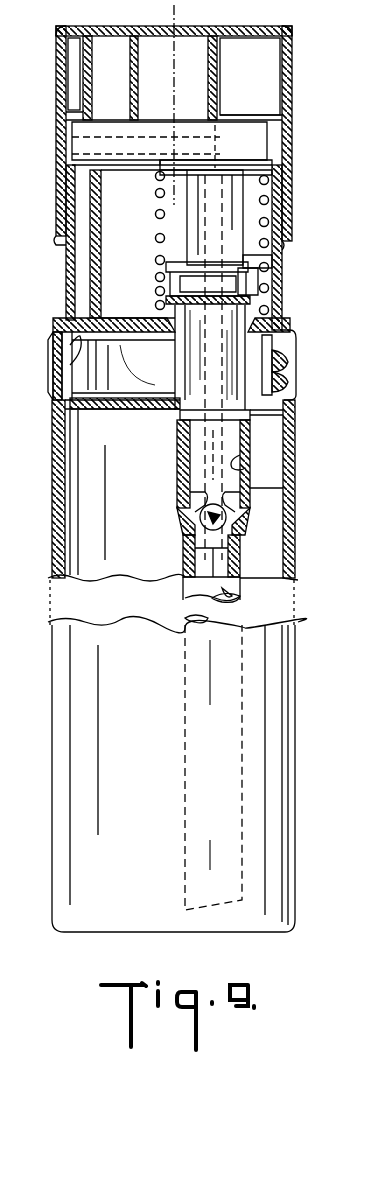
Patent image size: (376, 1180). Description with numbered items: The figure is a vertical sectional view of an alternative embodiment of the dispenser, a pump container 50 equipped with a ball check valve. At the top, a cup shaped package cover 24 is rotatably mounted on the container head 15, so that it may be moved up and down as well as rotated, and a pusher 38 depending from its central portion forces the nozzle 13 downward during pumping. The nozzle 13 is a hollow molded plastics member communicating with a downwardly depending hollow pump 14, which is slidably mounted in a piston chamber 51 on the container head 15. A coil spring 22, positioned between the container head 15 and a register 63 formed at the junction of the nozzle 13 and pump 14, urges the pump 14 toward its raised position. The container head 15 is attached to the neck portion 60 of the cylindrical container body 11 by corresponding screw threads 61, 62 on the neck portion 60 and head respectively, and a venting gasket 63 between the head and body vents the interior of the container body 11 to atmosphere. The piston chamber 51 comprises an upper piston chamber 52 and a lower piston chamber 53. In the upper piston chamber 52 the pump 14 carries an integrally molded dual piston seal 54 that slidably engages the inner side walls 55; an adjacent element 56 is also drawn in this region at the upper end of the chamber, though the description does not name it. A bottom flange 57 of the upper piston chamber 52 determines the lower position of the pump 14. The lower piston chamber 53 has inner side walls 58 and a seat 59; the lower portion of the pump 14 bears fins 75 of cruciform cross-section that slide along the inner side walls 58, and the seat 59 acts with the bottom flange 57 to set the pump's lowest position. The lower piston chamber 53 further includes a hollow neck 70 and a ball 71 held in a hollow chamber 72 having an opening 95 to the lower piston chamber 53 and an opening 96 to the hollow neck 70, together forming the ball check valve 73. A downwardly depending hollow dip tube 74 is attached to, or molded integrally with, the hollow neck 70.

The container body 11 is at (295, 436).
The nozzle 13 is at (126, 170).
The pump 14 is at (235, 228).
The container head 15 is at (284, 300).
The coil spring 22 is at (156, 239).
The package cover 24 is at (292, 56).
The pusher 38 is at (217, 88).
The pump container 50 is at (296, 648).
The piston chamber 51 is at (160, 371).
The upper piston chamber 52 is at (174, 343).
The lower piston chamber 53 is at (198, 455).
The dual piston seal 54 is at (168, 276).
The inner side walls of upper piston chamber 55 is at (262, 280).
The shoulder 56 is at (272, 258).
The bottom flange 57 is at (290, 383).
The inner side walls of lower piston chamber 58 is at (250, 462).
The seat 59 is at (160, 380).
The neck portion 60 is at (290, 368).
The screw threads 61 is at (290, 356).
The screw threads 62 is at (290, 340).
The venting gasket 63 is at (272, 181).
The hollow neck 70 is at (245, 557).
The ball 71 is at (200, 518).
The hollow chamber 72 is at (178, 505).
The ball check valve 73 is at (268, 525).
The hollow dip tube 74 is at (246, 596).
The fins 75 is at (185, 428).
The opening 95 is at (252, 488).
The opening 96 is at (195, 550).